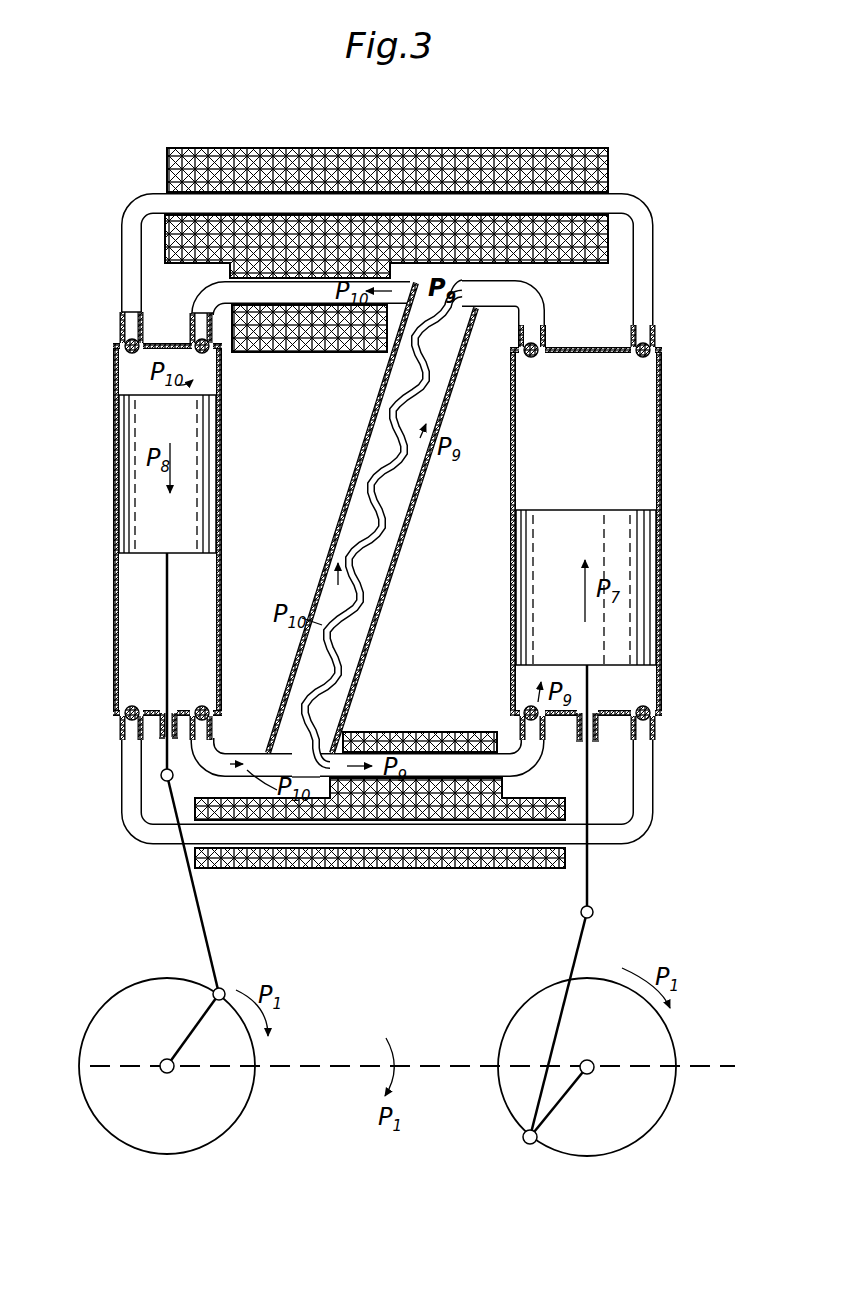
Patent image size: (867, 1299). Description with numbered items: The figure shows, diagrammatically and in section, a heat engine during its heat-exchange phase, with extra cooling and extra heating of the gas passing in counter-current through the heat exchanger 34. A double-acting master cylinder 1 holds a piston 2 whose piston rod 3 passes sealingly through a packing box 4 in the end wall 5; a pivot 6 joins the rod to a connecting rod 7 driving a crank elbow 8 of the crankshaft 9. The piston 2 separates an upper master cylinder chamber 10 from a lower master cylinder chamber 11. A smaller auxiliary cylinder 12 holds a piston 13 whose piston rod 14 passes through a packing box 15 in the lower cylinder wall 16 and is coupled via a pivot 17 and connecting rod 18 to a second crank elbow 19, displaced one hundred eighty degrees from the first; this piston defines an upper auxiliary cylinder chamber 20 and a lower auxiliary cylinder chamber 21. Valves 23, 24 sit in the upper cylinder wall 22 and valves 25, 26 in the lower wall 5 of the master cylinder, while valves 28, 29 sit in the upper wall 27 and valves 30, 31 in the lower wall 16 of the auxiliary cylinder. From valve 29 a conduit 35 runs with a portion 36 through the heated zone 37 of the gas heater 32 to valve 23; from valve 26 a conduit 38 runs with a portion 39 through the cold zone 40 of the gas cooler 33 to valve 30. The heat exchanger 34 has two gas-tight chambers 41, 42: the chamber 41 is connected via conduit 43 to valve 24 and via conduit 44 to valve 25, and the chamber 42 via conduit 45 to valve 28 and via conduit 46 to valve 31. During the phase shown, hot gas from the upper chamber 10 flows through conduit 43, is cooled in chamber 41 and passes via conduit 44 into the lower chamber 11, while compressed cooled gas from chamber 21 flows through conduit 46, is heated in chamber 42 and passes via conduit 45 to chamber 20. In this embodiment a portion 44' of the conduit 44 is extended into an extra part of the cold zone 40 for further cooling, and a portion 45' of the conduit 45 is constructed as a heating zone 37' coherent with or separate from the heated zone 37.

The master cylinder 1 is at (607, 532).
The piston 2 is at (660, 522).
The piston rod 3 is at (589, 878).
The packing box 4 is at (577, 728).
The end wall 5 is at (600, 722).
The pivot 6 is at (594, 910).
The connecting rod 7 is at (562, 1018).
The crank elbow 8 is at (565, 1103).
The crankshaft 9 is at (690, 1062).
The upper master cylinder chamber 10 is at (531, 357).
The lower master cylinder chamber 11 is at (645, 680).
The auxiliary cylinder 12 is at (113, 435).
The piston 13 is at (140, 480).
The piston rod 14 is at (170, 592).
The packing box 15 is at (136, 738).
The lower cylinder wall 16 is at (160, 710).
The pivot 17 is at (160, 776).
The connecting rod 18 is at (197, 921).
The second crank elbow 19 is at (194, 1028).
The upper auxiliary cylinder chamber 20 is at (166, 533).
The lower auxiliary cylinder chamber 21 is at (137, 589).
The upper cylinder wall 22 is at (560, 348).
The valve 23 is at (656, 338).
The valve 24 is at (523, 352).
The valve 25 is at (523, 706).
The valve 26 is at (662, 716).
The upper wall 27 is at (196, 343).
The valve 28 is at (217, 362).
The valve 29 is at (123, 336).
The valve 30 is at (126, 711).
The valve 31 is at (208, 708).
The gas heater 32 is at (308, 148).
The gas cooler 33 is at (380, 798).
The heat exchanger 34 is at (372, 524).
The conduit 35 is at (121, 285).
The portion 36 is at (344, 199).
The heated zone 37 is at (433, 140).
The heating zone 37' is at (309, 344).
The conduit 38 is at (657, 790).
The portion 39 is at (323, 860).
The cold zone 40 is at (440, 732).
The chamber 41 is at (382, 562).
The chamber 42 is at (356, 482).
The conduit 43 is at (505, 283).
The conduit 44 is at (449, 765).
The portion 44' is at (380, 799).
The conduit 45 is at (286, 291).
The portion 45' is at (344, 258).
The conduit 46 is at (228, 752).